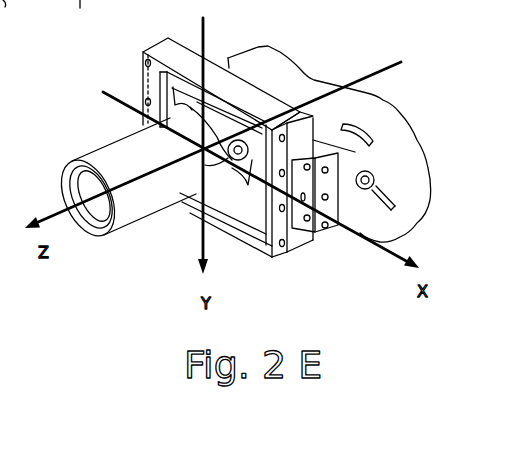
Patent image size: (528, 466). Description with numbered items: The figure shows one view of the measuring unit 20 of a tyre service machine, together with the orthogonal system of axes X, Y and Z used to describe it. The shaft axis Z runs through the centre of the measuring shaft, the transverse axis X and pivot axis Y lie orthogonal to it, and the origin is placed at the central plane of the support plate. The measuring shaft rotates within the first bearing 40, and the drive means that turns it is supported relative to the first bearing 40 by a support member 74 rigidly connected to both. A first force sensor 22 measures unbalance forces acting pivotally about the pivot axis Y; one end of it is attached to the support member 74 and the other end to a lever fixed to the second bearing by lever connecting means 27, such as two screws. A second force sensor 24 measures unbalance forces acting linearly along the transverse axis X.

The measuring unit 20 is at (65, 109).
The first bearing 40 is at (112, 157).
The lever connecting means 27 is at (238, 146).
The second force sensor 24 is at (252, 163).
The support member 74 is at (397, 0).
The first force sensor 22 is at (374, 181).